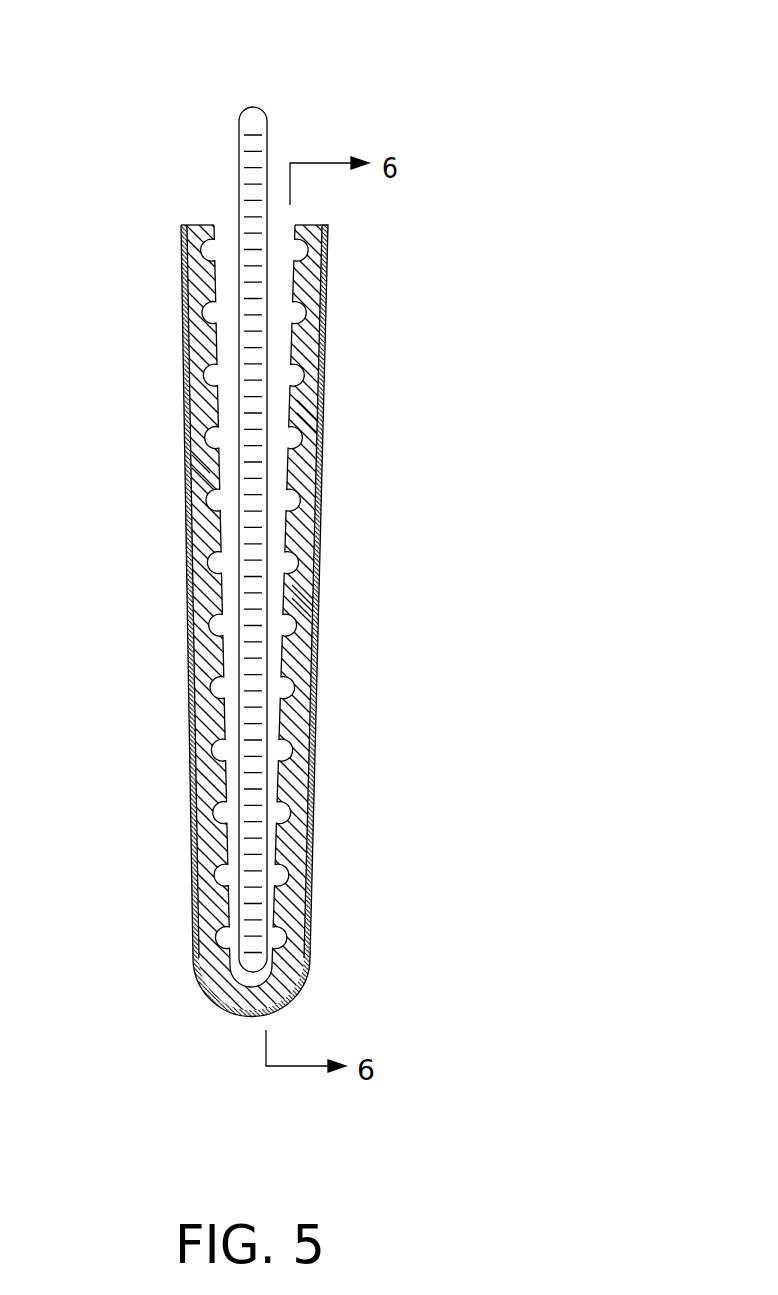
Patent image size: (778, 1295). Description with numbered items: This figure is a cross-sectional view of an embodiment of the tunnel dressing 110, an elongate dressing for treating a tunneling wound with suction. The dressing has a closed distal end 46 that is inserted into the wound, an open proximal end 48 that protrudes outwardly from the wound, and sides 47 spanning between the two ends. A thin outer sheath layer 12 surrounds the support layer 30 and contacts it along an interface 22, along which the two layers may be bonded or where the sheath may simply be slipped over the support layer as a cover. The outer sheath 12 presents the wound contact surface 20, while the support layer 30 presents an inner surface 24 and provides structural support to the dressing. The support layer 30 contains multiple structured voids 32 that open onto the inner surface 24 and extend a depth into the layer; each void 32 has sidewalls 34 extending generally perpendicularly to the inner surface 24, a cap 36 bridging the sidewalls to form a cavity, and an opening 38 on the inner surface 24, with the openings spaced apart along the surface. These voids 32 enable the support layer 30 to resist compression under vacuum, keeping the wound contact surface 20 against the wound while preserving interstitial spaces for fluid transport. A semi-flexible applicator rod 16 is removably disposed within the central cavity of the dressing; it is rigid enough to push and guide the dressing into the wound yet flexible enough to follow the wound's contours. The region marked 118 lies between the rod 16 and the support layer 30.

The tunnel dressing 110 is at (571, 166).
The outer sheath layer 12 is at (330, 228).
The applicator rod 16 is at (258, 130).
The wound contact surface 20 is at (323, 418).
The interface 22 is at (313, 598).
The inner surface 24 is at (321, 470).
The support layer 30 is at (308, 226).
The structured voids 32 is at (319, 299).
The sidewalls 34 is at (190, 418).
The cap 36 is at (208, 437).
The opening 38 is at (188, 455).
The closed distal end 46 is at (201, 1003).
The sides 47 is at (189, 812).
The open proximal end 48 is at (186, 194).
The annular gap 118 is at (229, 228).